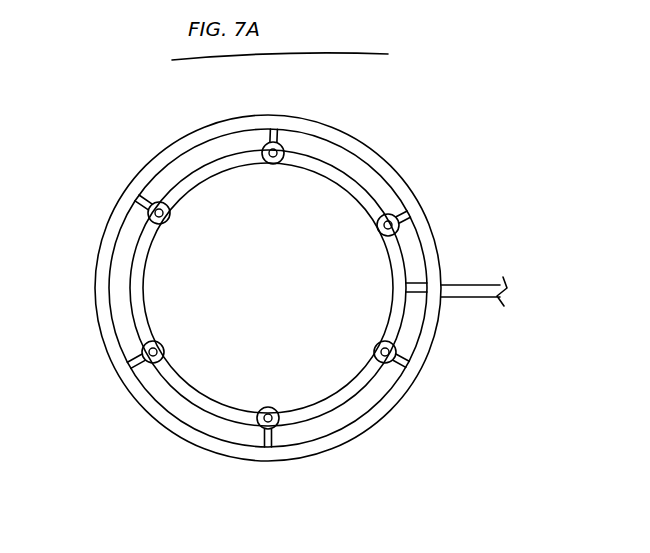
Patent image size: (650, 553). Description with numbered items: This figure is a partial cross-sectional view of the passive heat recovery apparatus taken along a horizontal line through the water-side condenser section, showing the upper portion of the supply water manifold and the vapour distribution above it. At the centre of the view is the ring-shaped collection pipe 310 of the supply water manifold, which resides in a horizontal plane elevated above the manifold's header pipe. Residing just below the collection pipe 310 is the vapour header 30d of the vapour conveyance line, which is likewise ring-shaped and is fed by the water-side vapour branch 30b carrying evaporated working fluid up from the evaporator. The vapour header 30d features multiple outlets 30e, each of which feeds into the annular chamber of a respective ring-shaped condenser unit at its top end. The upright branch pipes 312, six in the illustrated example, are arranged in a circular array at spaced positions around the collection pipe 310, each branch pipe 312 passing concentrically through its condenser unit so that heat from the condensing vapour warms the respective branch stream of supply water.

The vapour header 30d is at (356, 140).
The collection pipe 310 is at (340, 175).
The water-side vapour branch 30b is at (477, 284).
The outlets 30e is at (270, 131).
The branch pipes 312 is at (268, 163).